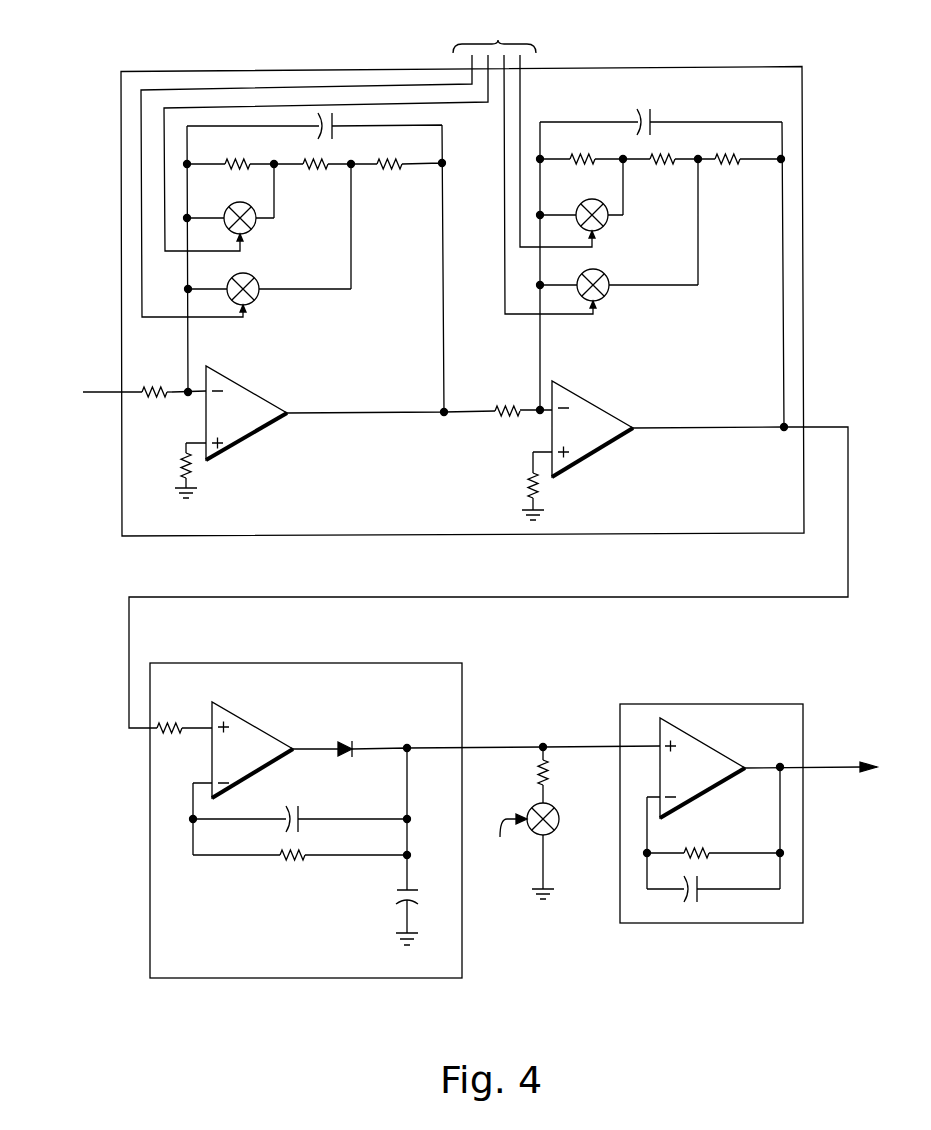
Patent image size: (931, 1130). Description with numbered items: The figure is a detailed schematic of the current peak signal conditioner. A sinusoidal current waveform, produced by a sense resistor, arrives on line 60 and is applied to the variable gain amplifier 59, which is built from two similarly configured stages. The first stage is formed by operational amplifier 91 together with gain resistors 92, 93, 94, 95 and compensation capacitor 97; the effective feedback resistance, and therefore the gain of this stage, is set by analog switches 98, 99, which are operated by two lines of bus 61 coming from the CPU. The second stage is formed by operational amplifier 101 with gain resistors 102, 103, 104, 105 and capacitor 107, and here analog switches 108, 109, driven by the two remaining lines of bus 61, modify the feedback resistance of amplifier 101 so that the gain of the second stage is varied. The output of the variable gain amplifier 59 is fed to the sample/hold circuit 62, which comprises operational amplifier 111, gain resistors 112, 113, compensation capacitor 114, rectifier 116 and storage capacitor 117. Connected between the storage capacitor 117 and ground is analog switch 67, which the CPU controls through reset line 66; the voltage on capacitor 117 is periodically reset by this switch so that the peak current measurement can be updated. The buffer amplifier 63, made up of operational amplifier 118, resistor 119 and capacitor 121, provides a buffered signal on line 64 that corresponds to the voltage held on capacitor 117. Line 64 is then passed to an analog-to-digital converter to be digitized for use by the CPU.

The variable gain amplifier 59 is at (382, 476).
The line 60 is at (105, 393).
The bus 61 is at (368, 163).
The sample/hold circuit 62 is at (240, 933).
The buffer amplifier 63 is at (757, 745).
The line 64 is at (835, 768).
The reset line 66 is at (507, 842).
The analog switch 67 is at (557, 820).
The operational amplifier 91 is at (237, 413).
The gain resistor 92 is at (157, 401).
The gain resistor 93 is at (249, 139).
The gain resistor 94 is at (312, 172).
The gain resistor 95 is at (387, 171).
The compensation capacitor 97 is at (336, 131).
The analog switch 98 is at (254, 226).
The analog switch 99 is at (254, 300).
The operational amplifier 101 is at (593, 422).
The gain resistor 102 is at (508, 418).
The gain resistor 103 is at (595, 140).
The gain resistor 104 is at (675, 163).
The gain resistor 105 is at (752, 182).
The capacitor 107 is at (652, 118).
The analog switch 108 is at (603, 229).
The analog switch 109 is at (606, 300).
The operational amplifier 111 is at (263, 750).
The gain resistor 112 is at (182, 718).
The gain resistor 113 is at (294, 866).
The compensation capacitor 114 is at (292, 806).
The rectifier 116 is at (343, 740).
The storage capacitor 117 is at (395, 895).
The operational amplifier 118 is at (706, 766).
The resistor 119 is at (717, 833).
The capacitor 121 is at (700, 897).